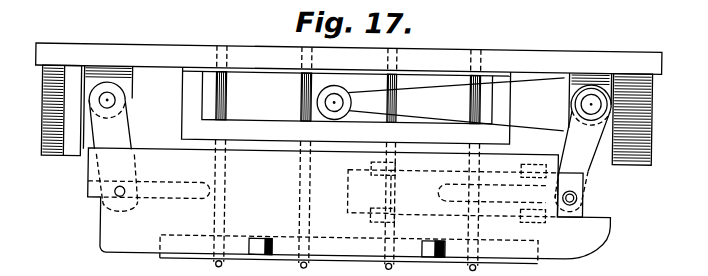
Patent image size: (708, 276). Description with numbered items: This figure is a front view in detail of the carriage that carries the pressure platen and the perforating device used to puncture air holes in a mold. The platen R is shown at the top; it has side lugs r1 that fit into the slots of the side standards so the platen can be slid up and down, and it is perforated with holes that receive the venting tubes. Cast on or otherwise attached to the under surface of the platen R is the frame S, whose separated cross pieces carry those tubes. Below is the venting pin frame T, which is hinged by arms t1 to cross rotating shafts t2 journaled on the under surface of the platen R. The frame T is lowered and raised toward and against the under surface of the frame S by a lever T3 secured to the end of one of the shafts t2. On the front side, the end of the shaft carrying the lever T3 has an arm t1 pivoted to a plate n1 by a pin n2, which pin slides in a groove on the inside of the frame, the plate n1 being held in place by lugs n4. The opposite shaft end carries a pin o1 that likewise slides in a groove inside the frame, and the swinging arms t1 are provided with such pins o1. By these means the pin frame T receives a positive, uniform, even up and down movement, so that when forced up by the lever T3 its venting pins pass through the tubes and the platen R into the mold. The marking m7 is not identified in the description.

The platen R is at (530, 46).
The frame S is at (190, 115).
The side lugs r1 is at (661, 105).
The arms t1 is at (601, 168).
The cross rotating shafts t2 is at (113, 99).
The lever T3 is at (441, 102).
The lugs n4 is at (230, 91).
The venting pin frame T is at (597, 249).
The plate n1 is at (350, 178).
The pin n2 is at (580, 190).
The pins o1 is at (118, 194).
The block m7 is at (438, 251).